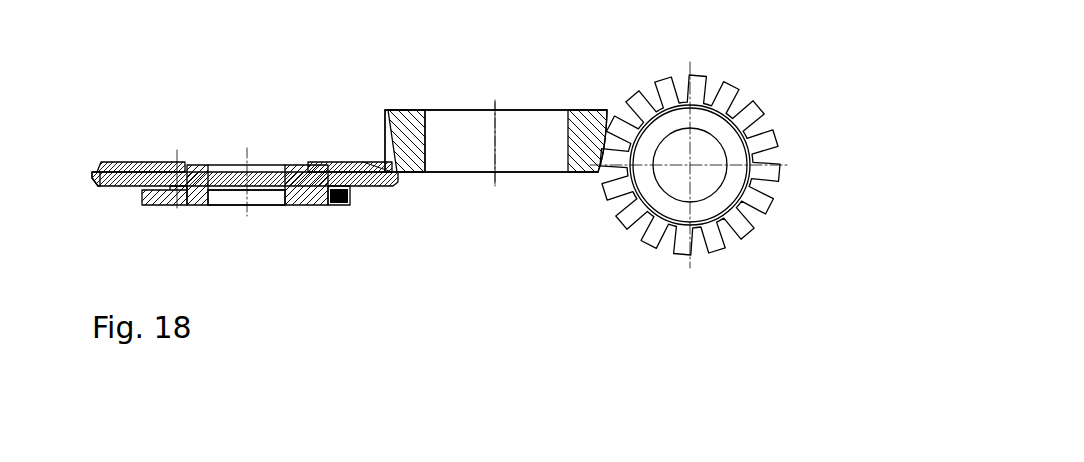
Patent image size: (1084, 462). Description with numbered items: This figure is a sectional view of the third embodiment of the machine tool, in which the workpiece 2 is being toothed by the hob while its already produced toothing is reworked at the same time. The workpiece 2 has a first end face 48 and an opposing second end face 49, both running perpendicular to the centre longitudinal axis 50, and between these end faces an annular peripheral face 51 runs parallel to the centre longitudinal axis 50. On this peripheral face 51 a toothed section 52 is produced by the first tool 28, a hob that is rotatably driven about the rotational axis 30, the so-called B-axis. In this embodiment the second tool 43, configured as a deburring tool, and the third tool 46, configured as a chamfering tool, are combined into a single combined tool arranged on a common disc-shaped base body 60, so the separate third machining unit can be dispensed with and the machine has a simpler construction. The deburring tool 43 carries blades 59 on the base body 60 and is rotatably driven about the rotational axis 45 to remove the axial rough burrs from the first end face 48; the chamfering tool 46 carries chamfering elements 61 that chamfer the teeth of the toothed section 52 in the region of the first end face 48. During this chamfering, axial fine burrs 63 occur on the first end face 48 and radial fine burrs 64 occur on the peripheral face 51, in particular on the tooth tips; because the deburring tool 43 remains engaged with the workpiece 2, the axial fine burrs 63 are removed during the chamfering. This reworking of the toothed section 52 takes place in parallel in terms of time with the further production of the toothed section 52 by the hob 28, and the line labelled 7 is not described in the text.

The workpiece 2 is at (554, 106).
The axis of rotation 7 is at (497, 108).
The first tool 28 is at (690, 131).
The rotational axis 30 is at (688, 163).
The second tool 43 is at (291, 158).
The rotational axis 45 is at (247, 212).
The third tool 46 is at (246, 195).
The first end face 48 is at (420, 173).
The second end face 49 is at (415, 110).
The centre longitudinal axis 50 is at (496, 179).
The peripheral face 51 is at (383, 113).
The toothed section 52 is at (378, 135).
The blades 59 is at (117, 187).
The base body 60 is at (192, 162).
The chamfering elements 61 is at (135, 162).
The axial fine burrs 63 is at (597, 173).
The radial fine burrs 64 is at (617, 116).